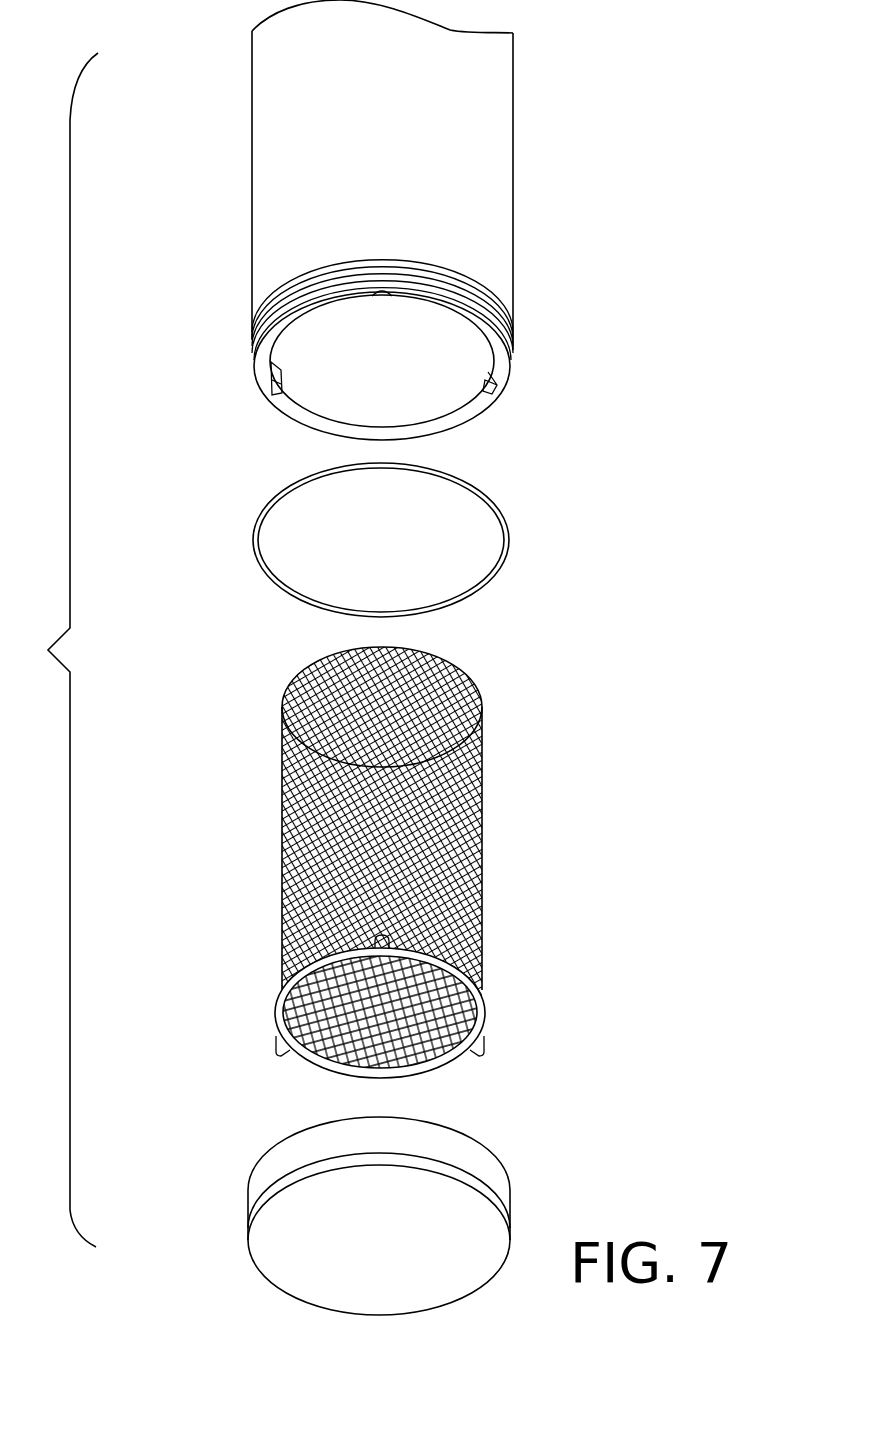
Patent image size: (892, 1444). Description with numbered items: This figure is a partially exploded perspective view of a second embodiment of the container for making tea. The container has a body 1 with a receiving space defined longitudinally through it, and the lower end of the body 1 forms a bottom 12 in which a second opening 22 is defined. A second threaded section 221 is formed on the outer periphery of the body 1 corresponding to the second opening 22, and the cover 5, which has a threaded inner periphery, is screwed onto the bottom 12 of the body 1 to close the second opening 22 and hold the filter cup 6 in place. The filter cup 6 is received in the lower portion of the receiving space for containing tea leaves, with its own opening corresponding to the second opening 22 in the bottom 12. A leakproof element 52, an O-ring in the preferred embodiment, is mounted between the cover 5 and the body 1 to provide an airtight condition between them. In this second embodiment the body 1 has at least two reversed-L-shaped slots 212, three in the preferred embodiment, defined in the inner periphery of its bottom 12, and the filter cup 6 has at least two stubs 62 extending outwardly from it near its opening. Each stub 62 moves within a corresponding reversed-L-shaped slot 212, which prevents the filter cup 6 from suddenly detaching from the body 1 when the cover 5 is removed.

The body 1 is at (376, 257).
The bottom 12 is at (363, 403).
The second opening 22 is at (447, 400).
The second threaded section 221 is at (505, 294).
The reversed-L-shaped slots 212 is at (492, 386).
The leakproof element 52 is at (508, 553).
The filter cup 6 is at (462, 869).
The stubs 62 is at (482, 1060).
The cover 5 is at (487, 1161).